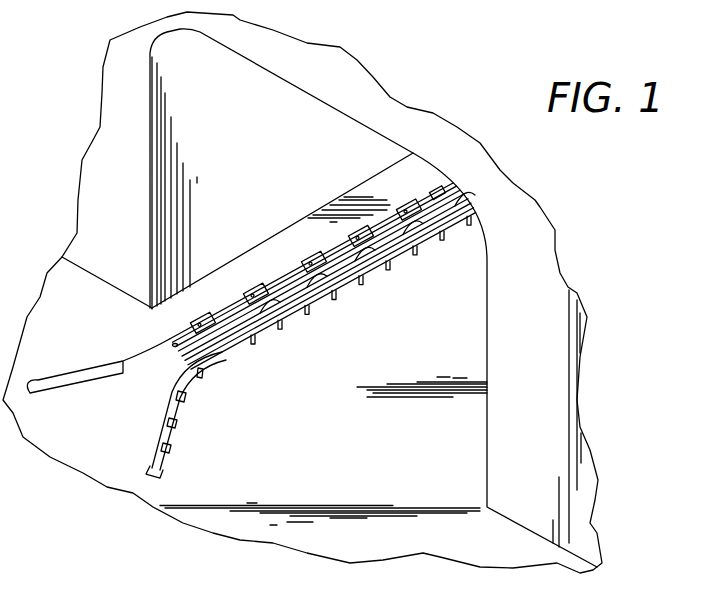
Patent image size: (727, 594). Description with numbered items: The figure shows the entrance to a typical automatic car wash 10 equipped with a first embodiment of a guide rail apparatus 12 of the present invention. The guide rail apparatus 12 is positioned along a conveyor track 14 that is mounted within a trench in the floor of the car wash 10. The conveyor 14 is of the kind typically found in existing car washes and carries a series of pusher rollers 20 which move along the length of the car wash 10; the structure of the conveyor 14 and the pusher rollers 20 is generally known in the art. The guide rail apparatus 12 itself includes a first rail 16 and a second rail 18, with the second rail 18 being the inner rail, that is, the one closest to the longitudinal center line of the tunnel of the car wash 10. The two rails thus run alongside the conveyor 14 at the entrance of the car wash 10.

The automatic car wash 10 is at (302, 118).
The guide rail apparatus 12 is at (192, 308).
The conveyor track 14 is at (202, 337).
The first rail 16 is at (305, 262).
The second rail 18 is at (263, 330).
The pusher rollers 20 is at (317, 288).